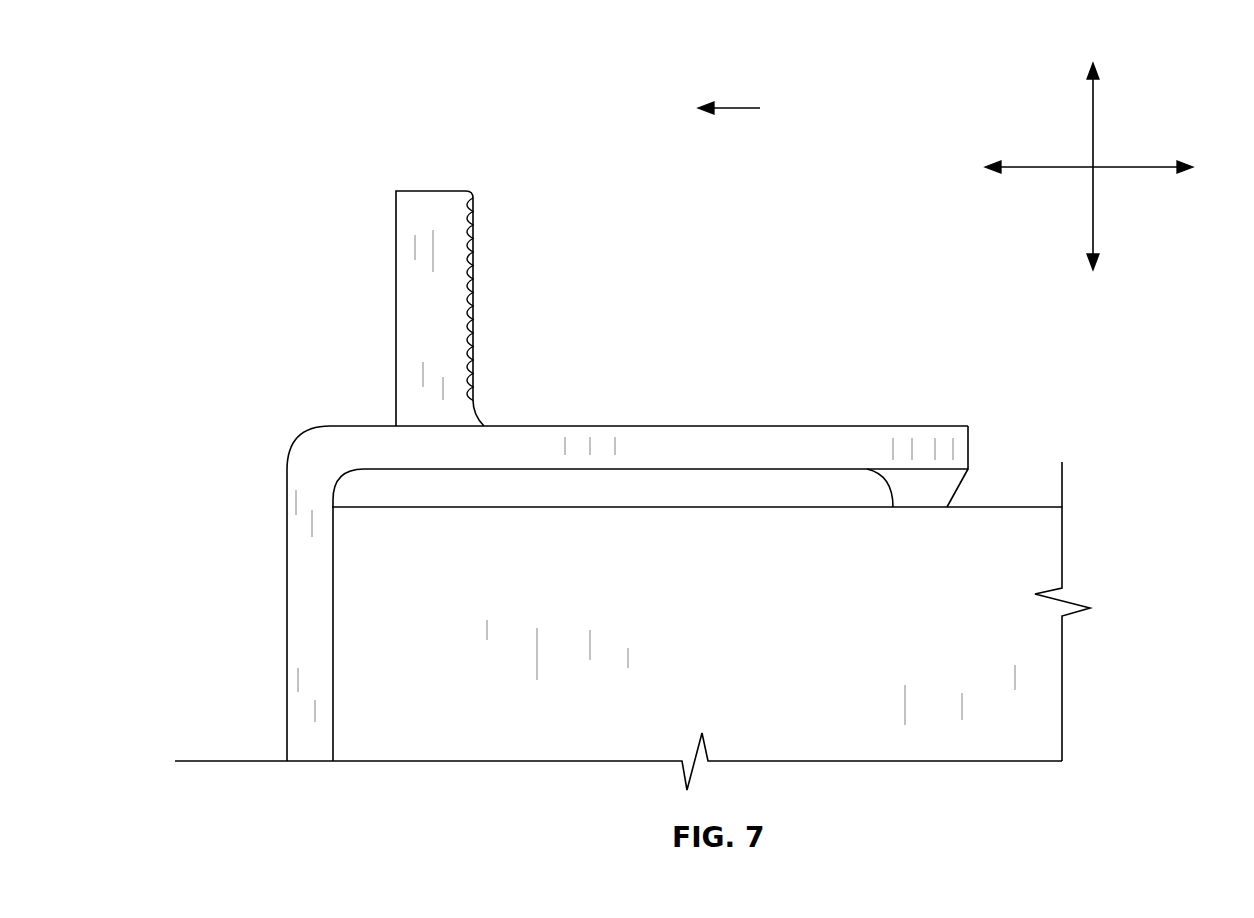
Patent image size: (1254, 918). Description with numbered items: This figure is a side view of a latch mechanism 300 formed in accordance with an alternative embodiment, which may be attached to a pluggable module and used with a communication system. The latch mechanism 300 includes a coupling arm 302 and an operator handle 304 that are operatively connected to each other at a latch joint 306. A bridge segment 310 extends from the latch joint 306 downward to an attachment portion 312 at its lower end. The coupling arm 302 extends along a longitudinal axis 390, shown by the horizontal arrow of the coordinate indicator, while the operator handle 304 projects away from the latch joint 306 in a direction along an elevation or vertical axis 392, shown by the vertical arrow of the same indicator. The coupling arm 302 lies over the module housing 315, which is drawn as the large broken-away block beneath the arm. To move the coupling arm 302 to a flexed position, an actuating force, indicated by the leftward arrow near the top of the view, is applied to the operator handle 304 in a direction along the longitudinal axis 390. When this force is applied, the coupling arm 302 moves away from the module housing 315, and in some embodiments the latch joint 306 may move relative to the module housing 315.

The latch mechanism 300 is at (229, 146).
The coupling arm 302 is at (681, 426).
The operator handle 304 is at (396, 260).
The latch joint 306 is at (388, 407).
The bridge segment 310 is at (287, 553).
The attachment portion 312 is at (260, 704).
The module housing 315 is at (1022, 507).
The longitudinal axis 390 is at (1127, 167).
The vertical axis 392 is at (1093, 128).